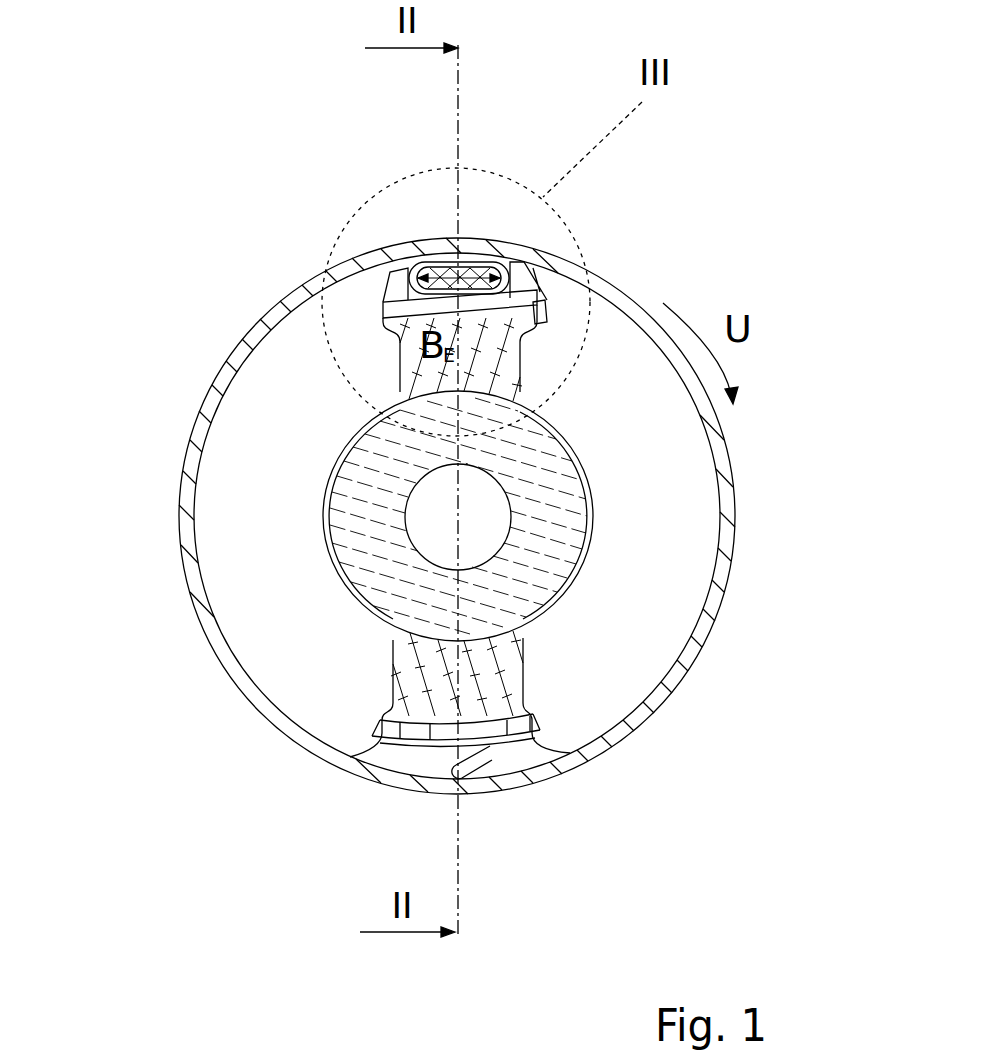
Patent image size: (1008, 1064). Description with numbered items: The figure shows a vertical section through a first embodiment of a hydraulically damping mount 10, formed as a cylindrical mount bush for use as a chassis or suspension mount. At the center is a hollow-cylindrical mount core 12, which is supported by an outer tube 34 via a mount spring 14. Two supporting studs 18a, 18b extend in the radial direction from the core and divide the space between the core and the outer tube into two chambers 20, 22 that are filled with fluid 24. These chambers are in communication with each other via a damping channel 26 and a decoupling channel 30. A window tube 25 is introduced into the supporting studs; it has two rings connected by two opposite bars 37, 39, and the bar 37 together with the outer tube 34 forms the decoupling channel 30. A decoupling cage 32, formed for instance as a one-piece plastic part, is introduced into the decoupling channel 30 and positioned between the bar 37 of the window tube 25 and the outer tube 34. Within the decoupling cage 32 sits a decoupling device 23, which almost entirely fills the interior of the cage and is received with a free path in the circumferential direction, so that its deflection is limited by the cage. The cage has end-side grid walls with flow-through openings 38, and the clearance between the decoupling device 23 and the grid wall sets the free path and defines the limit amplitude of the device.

The hydraulically damping mount 10 is at (369, 184).
The mount core 12 is at (533, 528).
The mount spring 14 is at (522, 372).
The supporting stud 18a is at (493, 667).
The supporting stud 18b is at (410, 378).
The chamber 20 is at (298, 453).
The chamber 22 is at (642, 632).
The decoupling device 23 is at (440, 323).
The fluid 24 is at (288, 630).
The window tube 25 is at (374, 310).
The damping channel 26 is at (400, 760).
The decoupling channel 30 is at (508, 282).
The decoupling cage 32 is at (514, 278).
The outer tube 34 is at (547, 760).
The bar 37 is at (546, 307).
The flow-through openings 38 is at (347, 288).
The bar 39 is at (487, 735).